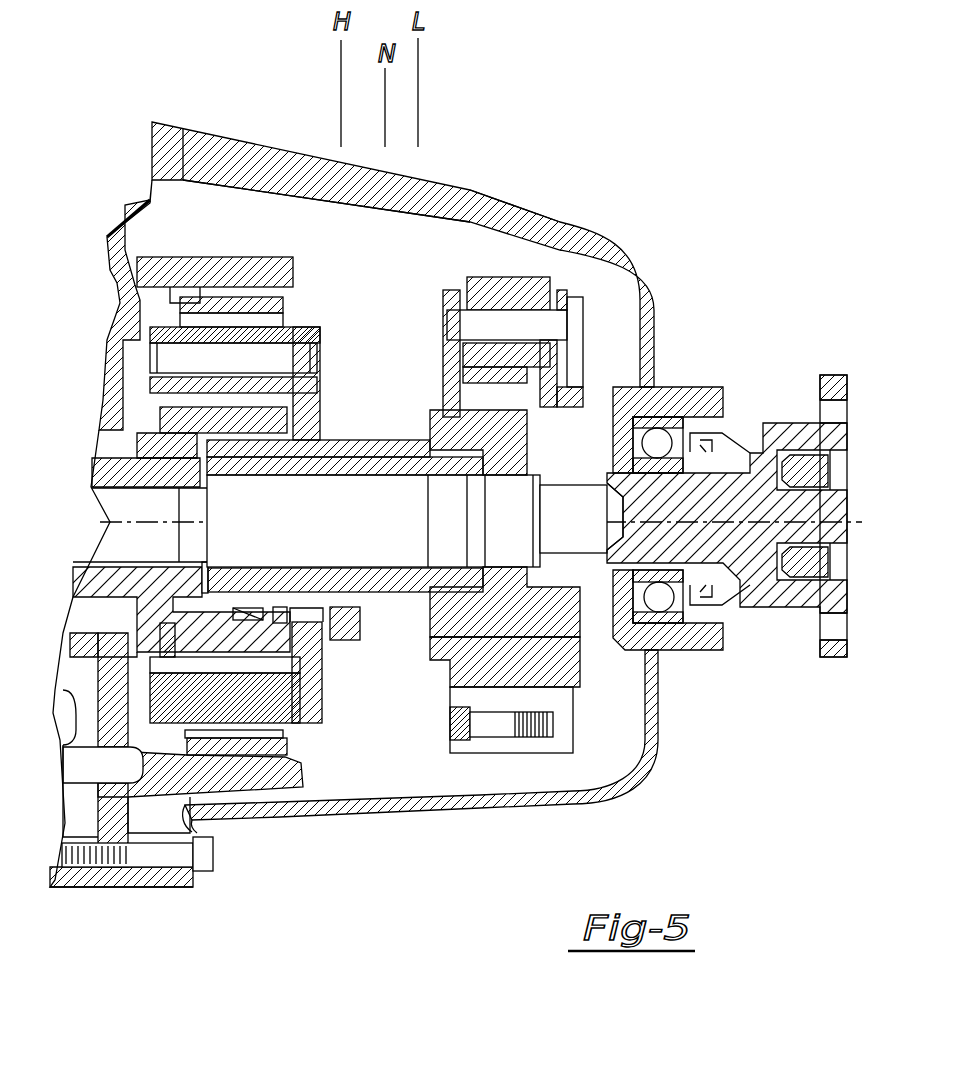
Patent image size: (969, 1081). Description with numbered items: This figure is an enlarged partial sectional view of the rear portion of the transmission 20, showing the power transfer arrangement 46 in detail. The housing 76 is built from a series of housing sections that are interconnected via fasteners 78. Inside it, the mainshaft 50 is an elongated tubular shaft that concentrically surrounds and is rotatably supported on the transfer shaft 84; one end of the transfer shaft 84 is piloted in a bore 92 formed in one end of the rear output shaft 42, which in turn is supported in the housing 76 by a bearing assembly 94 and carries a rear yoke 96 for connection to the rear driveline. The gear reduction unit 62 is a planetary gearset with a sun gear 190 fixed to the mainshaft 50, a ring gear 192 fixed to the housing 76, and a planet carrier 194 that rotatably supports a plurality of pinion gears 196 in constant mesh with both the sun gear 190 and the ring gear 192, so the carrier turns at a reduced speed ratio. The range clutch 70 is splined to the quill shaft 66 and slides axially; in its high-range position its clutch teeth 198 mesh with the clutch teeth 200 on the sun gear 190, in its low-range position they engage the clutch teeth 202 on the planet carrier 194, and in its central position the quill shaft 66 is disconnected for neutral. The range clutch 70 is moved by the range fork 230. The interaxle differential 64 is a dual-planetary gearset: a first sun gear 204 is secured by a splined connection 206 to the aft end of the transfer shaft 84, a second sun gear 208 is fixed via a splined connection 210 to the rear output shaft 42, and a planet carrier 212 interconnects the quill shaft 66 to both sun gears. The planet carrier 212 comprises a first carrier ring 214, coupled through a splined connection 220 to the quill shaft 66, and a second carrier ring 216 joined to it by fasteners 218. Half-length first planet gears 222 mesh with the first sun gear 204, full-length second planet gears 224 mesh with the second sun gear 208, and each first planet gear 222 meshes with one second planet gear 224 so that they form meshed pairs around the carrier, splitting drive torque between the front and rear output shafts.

The transmission 20 is at (440, 165).
The rear output shaft 42 is at (715, 535).
The power transfer arrangement 46 is at (407, 297).
The mainshaft 50 is at (128, 577).
The gear reduction unit 62 is at (229, 252).
The interaxle differential 64 is at (597, 317).
The quill shaft 66 is at (393, 580).
The range clutch 70 is at (372, 433).
The housing 76 is at (306, 178).
The fasteners 78 is at (212, 872).
The transfer shaft 84 is at (389, 512).
The bore 92 is at (612, 627).
The bearing assembly 94 is at (657, 443).
The rear yoke 96 is at (797, 440).
The sun gear 190 is at (197, 627).
The ring gear 192 is at (247, 743).
The planet carrier 194 is at (303, 330).
The pinion gears 196 is at (205, 318).
The clutch teeth 198 is at (247, 433).
The clutch teeth 200 is at (322, 742).
The clutch teeth 202 is at (296, 437).
The first sun gear 204 is at (570, 395).
The splined connection 206 is at (548, 636).
The second sun gear 208 is at (605, 415).
The splined connection 210 is at (612, 423).
The planet carrier 212 is at (574, 352).
The first carrier ring 214 is at (465, 306).
The second carrier ring 216 is at (556, 306).
The fasteners 218 is at (500, 723).
The splined connection 220 is at (560, 645).
The first planet gears 222 is at (467, 690).
The second planet gears 224 is at (560, 300).
The range fork 230 is at (353, 630).